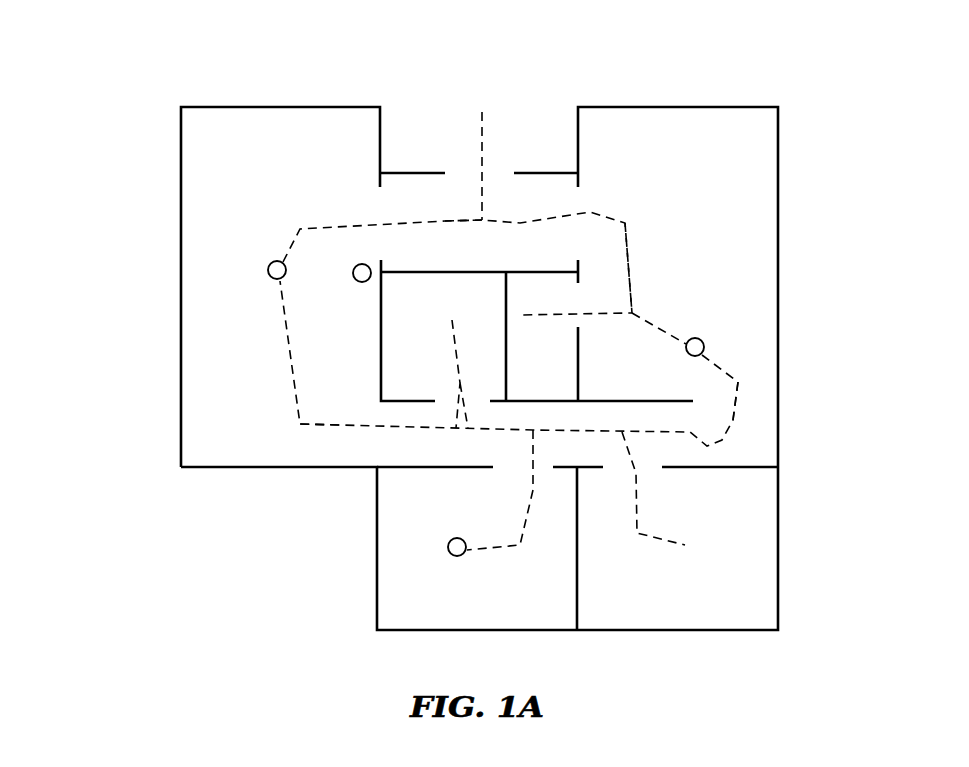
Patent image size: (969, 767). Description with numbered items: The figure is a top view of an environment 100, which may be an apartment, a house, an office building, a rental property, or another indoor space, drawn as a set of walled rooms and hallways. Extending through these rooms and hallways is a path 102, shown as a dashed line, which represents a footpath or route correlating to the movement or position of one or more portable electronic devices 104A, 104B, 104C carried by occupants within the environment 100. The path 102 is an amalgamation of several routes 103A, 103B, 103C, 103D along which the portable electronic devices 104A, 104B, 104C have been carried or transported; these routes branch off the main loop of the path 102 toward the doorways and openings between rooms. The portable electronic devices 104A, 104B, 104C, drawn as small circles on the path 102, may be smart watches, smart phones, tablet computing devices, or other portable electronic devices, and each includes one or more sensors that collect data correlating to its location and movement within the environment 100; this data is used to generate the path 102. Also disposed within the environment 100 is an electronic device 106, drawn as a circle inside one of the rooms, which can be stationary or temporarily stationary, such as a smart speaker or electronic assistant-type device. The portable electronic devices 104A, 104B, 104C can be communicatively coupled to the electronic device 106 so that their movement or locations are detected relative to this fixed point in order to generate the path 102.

The environment 100 is at (168, 55).
The path 102 is at (306, 200).
The route 103A is at (446, 218).
The route 103B is at (300, 422).
The route 103C is at (738, 382).
The route 103D is at (625, 222).
The portable electronic device 104A is at (268, 272).
The portable electronic device 104B is at (448, 548).
The portable electronic device 104C is at (702, 340).
The electronic device 106 is at (354, 279).